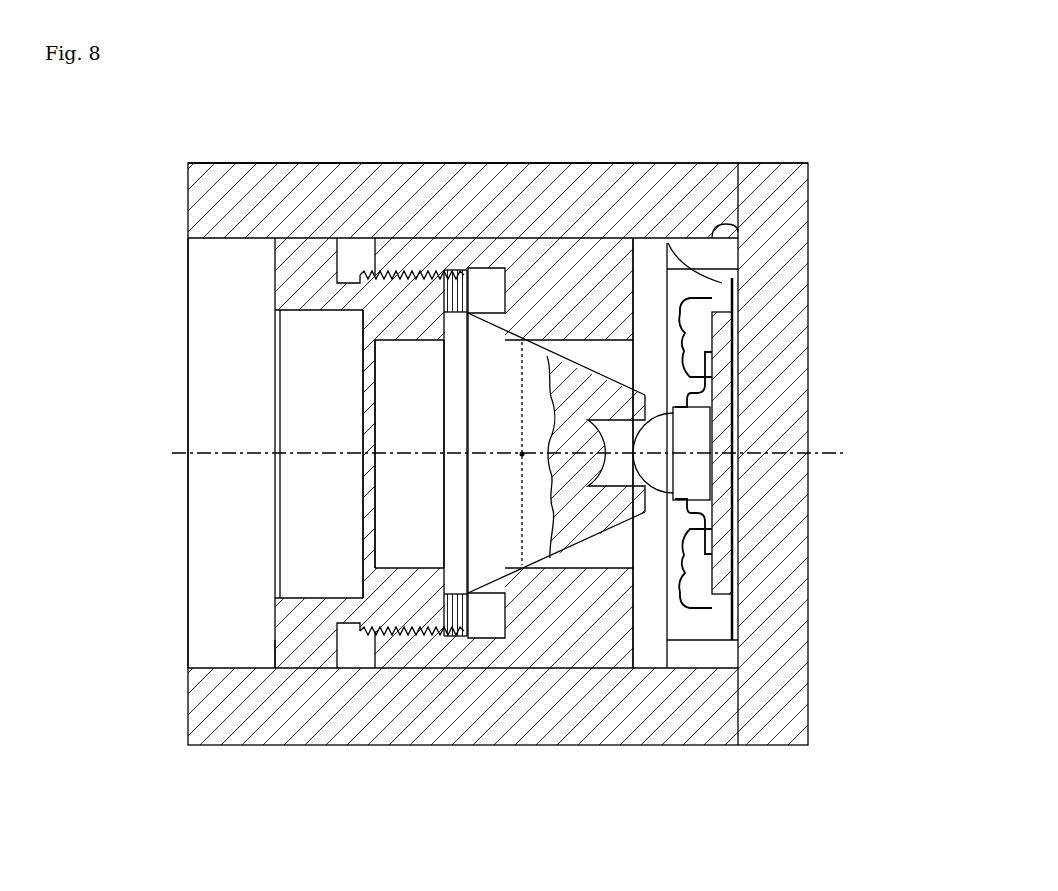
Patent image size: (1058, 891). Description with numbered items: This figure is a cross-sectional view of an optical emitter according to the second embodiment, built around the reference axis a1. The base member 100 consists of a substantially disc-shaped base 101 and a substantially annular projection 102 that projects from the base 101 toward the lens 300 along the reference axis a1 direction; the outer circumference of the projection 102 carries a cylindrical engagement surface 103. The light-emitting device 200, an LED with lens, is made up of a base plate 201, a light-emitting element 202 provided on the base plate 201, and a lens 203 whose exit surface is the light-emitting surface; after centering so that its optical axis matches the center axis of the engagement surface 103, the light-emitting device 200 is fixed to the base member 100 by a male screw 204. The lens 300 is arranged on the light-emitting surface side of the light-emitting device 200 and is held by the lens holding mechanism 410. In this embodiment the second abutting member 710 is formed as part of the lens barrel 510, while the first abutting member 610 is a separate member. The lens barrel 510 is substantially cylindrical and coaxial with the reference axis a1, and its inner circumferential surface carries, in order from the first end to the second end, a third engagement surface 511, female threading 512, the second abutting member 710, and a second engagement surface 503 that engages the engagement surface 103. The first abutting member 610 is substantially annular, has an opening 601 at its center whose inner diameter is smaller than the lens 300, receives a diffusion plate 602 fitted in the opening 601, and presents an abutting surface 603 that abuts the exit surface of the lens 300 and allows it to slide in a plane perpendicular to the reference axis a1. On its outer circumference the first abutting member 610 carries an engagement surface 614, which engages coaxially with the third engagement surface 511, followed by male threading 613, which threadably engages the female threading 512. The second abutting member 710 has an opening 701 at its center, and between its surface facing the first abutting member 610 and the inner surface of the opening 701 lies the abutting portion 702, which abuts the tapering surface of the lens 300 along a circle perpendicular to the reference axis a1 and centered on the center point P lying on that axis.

The base member 100 is at (855, 333).
The base 101 is at (780, 198).
The projection 102 is at (737, 285).
The engagement surface 103 is at (733, 224).
The light-emitting device 200 is at (788, 459).
The base plate 201 is at (740, 384).
The light-emitting element 202 is at (693, 432).
The lens 203 is at (657, 470).
The male screw 204 is at (700, 582).
The lens 300 is at (496, 396).
The lens holding mechanism 410 is at (155, 352).
The second engagement surface 503 is at (668, 238).
The lens barrel 510 is at (252, 163).
The third engagement surface 511 is at (346, 245).
The female threading 512 is at (428, 268).
The opening 601 is at (388, 553).
The diffusion plate 602 is at (370, 505).
The abutting surface 603 is at (458, 638).
The first abutting member 610 is at (313, 652).
The male threading 613 is at (402, 634).
The engagement surface 614 is at (300, 673).
The opening 701 is at (588, 560).
The abutting portion 702 is at (506, 569).
The second abutting member 710 is at (638, 634).
The center point P is at (519, 456).
The reference axis a1 is at (493, 454).